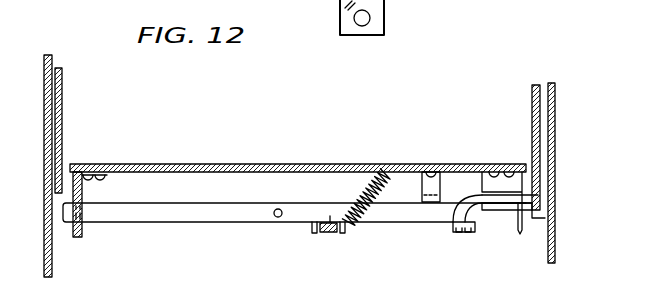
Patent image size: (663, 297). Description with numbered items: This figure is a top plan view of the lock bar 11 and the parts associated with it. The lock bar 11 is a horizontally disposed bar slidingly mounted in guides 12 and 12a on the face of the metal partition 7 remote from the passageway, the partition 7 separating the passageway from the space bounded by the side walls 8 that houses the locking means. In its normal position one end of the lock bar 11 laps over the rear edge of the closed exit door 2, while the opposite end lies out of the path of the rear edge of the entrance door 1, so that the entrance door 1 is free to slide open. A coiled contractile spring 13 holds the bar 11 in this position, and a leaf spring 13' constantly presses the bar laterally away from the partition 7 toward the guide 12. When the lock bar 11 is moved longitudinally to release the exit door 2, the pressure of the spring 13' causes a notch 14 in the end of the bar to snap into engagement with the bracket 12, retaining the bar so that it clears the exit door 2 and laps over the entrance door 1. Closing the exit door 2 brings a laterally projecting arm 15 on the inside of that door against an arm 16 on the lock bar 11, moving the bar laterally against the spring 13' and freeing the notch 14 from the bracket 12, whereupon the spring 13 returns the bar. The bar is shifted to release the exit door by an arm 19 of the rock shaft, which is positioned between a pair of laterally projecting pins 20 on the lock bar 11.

The entrance door 1 is at (62, 118).
The exit door 2 is at (532, 110).
The metal partition 7 is at (315, 164).
The side walls 8 is at (50, 66).
The lock bar 11 is at (240, 212).
The guide 12 is at (519, 236).
The guide 12a is at (106, 177).
The coiled contractile spring 13 is at (370, 213).
The leaf spring 13' is at (428, 166).
The notch 14 is at (545, 218).
The laterally-projecting arm 15 is at (497, 208).
The arm 16 is at (480, 172).
The arm 19 is at (330, 222).
The laterally-projecting pins 20 is at (314, 233).